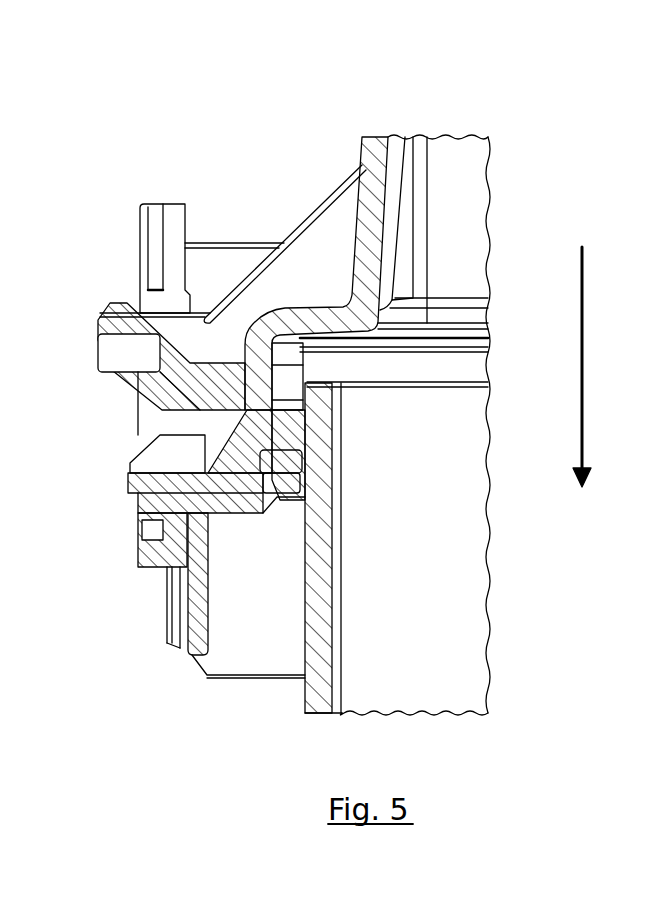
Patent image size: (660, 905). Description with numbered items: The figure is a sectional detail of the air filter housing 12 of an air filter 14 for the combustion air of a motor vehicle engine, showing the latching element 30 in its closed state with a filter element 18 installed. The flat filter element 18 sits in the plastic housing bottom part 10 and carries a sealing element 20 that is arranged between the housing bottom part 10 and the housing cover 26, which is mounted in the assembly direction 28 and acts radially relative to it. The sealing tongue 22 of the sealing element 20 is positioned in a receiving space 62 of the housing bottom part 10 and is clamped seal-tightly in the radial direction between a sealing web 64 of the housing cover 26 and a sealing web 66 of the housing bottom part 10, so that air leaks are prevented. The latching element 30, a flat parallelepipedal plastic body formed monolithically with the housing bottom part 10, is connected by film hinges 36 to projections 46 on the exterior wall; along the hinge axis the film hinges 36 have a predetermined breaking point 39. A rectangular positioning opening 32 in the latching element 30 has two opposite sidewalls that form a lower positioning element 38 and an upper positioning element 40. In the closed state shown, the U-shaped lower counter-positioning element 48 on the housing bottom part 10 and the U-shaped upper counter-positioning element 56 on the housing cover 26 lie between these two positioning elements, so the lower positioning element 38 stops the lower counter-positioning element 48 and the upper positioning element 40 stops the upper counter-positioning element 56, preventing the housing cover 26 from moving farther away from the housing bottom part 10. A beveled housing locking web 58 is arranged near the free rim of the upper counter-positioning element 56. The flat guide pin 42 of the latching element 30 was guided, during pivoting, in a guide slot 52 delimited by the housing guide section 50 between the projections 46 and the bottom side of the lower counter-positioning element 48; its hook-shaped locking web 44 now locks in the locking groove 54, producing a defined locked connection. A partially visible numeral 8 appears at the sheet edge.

The housing bottom part 10 is at (323, 707).
The air filter housing 12 is at (288, 713).
The air filter 14 is at (218, 124).
The filter element 18 is at (447, 541).
The sealing element 20 is at (473, 365).
The sealing tongue 22 is at (287, 422).
The housing cover 26 is at (368, 160).
The assembly direction 28 is at (583, 423).
The latching element 30 is at (143, 208).
The positioning opening 32 is at (147, 422).
The film hinges 36 is at (180, 643).
The lower positioning element 38 is at (138, 493).
The predetermined breaking point 39 is at (180, 647).
The upper positioning element 40 is at (163, 307).
The guide pin 42 is at (233, 510).
The locking web 44 is at (303, 515).
The projections 46 is at (258, 627).
The lower counter-positioning element 48 is at (133, 470).
The housing guide section 50 is at (202, 653).
The guide slot 52 is at (210, 530).
The locking groove 54 is at (307, 485).
The upper counter-positioning element 56 is at (108, 312).
The housing locking web 58 is at (113, 313).
The receiving space 62 is at (293, 442).
The sealing web 64 is at (160, 380).
The sealing web 66 is at (317, 435).
The housing (partial) 8 is at (4, 359).